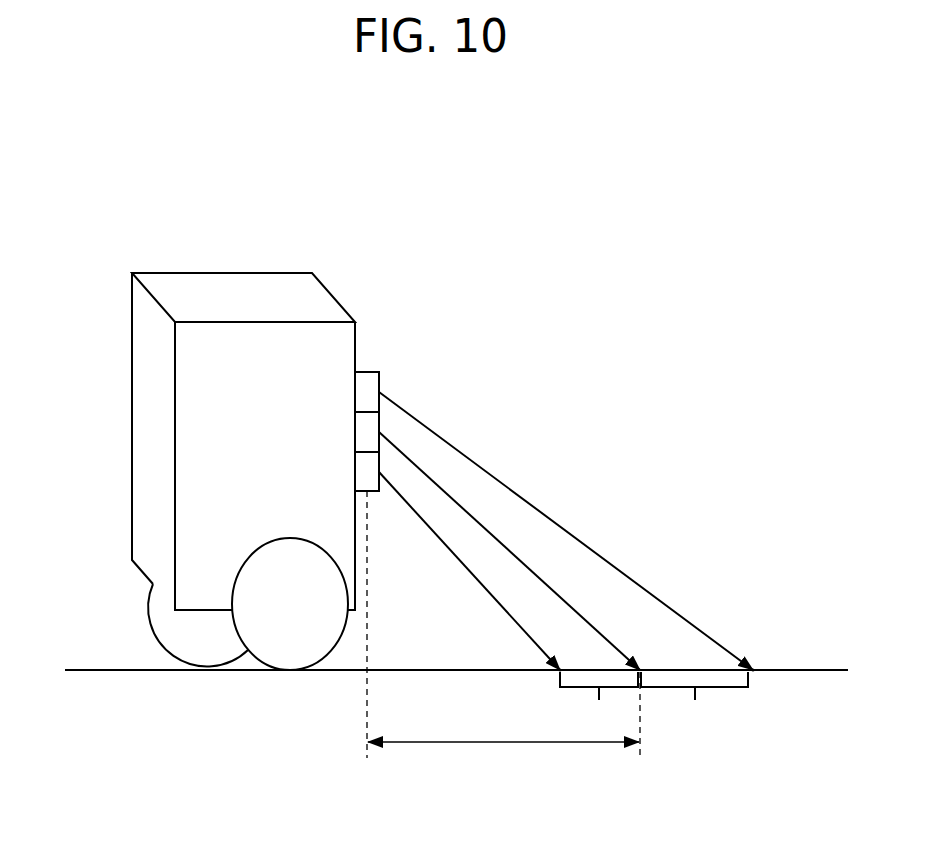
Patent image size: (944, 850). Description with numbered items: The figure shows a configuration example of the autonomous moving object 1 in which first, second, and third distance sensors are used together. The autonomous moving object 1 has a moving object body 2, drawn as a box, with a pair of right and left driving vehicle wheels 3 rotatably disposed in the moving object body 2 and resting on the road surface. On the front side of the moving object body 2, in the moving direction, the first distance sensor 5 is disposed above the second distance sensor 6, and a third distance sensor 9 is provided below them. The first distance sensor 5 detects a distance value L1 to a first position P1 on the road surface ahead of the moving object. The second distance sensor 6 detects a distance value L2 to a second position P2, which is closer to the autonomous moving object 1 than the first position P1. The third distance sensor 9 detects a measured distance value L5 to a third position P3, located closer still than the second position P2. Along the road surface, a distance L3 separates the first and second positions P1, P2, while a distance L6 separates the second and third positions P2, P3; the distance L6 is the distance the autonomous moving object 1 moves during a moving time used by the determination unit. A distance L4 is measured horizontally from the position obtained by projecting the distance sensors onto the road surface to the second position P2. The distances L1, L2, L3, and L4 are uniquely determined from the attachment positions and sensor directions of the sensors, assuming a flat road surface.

The autonomous moving object 1 is at (47, 265).
The moving object body 2 is at (140, 447).
The driving vehicle wheels 3 is at (193, 655).
The first distance sensor 5 is at (379, 380).
The second distance sensor 6 is at (379, 422).
The third distance sensor 9 is at (382, 493).
The distance value L1 is at (566, 531).
The distance value L2 is at (509, 551).
The measured distance value L5 is at (469, 571).
The distance between first and second positions L3 is at (694, 702).
The distance L6 is at (599, 702).
The distance from projected sensor position to second position L4 is at (503, 762).
The first position P1 is at (753, 668).
The second position P2 is at (640, 672).
The third position P3 is at (560, 673).